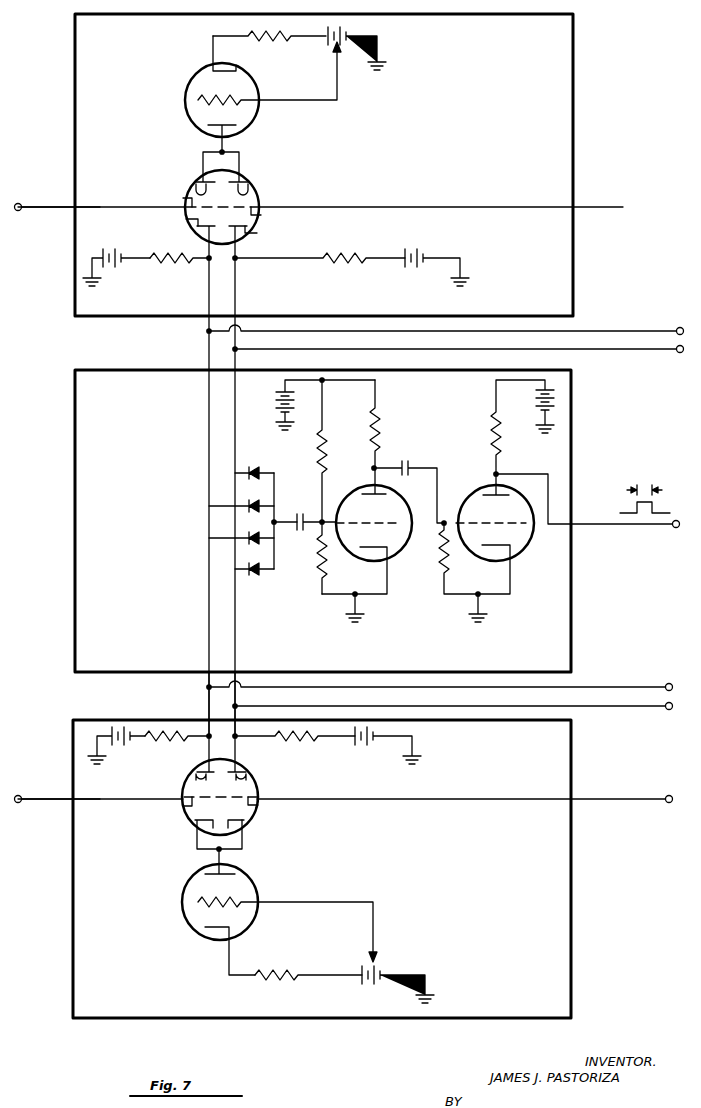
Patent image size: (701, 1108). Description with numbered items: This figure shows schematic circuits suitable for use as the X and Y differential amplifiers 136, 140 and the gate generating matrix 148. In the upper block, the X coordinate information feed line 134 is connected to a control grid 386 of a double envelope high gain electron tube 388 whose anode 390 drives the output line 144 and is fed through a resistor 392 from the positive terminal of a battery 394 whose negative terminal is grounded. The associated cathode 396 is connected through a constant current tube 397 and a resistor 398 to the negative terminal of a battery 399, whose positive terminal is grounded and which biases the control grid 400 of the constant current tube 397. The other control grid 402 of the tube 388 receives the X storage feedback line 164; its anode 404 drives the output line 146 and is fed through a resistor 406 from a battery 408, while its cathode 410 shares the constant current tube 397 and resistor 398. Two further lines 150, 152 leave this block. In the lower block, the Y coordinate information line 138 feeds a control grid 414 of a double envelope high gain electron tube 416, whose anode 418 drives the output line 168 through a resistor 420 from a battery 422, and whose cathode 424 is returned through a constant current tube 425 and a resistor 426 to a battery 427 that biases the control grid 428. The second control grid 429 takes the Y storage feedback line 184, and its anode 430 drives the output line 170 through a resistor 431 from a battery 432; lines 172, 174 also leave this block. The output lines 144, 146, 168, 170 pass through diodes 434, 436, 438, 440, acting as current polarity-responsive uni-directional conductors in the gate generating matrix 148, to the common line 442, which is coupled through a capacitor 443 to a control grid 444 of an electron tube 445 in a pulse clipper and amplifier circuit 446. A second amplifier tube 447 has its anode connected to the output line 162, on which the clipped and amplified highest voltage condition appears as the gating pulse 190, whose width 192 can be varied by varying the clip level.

The X coordinate information feed line 134 is at (37, 218).
The X differential amplifier 136 is at (575, 48).
The Y coordinate information line 138 is at (37, 812).
The Y differential amplifier 140 is at (573, 862).
The output line 144 is at (208, 345).
The output line 146 is at (237, 357).
The gate generating matrix 148 is at (573, 470).
The output line 150 is at (624, 333).
The output line 152 is at (622, 350).
The output line 162 is at (648, 530).
The X storage feedback line 164 is at (598, 207).
The output line 168 is at (208, 700).
The output line 170 is at (237, 695).
The output line 172 is at (610, 707).
The output line 174 is at (618, 688).
The Y storage feedback line 184 is at (622, 799).
The gating pulse 190 is at (654, 507).
The width 192 is at (644, 490).
The control grid 386 is at (183, 198).
The double envelope high gain electron tube 388 is at (260, 196).
The anode 390 is at (186, 219).
The resistor 392 is at (166, 265).
The battery 394 is at (108, 275).
The cathode 396 is at (196, 178).
The constant current tube 397 is at (257, 126).
The resistor 398 is at (266, 42).
The battery 399 is at (352, 36).
The control grid 400 is at (292, 100).
The control grid 402 is at (261, 214).
The anode 404 is at (257, 233).
The resistor 406 is at (334, 266).
The battery 408 is at (408, 268).
The cathode 410 is at (249, 180).
The control grid 414 is at (190, 808).
The double envelope high gain electron tube 416 is at (252, 826).
The anode 418 is at (195, 780).
The resistor 420 is at (158, 740).
The battery 422 is at (120, 728).
The cathode 424 is at (196, 822).
The constant current tube 425 is at (183, 905).
The resistor 426 is at (262, 980).
The battery 427 is at (362, 988).
The control grid 428 is at (272, 902).
The control grid 429 is at (256, 808).
The anode 430 is at (248, 783).
The resistor 431 is at (298, 740).
The battery 432 is at (362, 748).
The diode 434 is at (251, 503).
The diode 436 is at (252, 470).
The diode 438 is at (251, 541).
The diode 440 is at (255, 575).
The line 442 is at (292, 528).
The capacitor 443 is at (298, 516).
The control grid 444 is at (386, 548).
The electron tube 445 is at (355, 503).
The pulse clipper and amplifier circuit 446 is at (298, 455).
The amplifier tube 447 is at (526, 548).